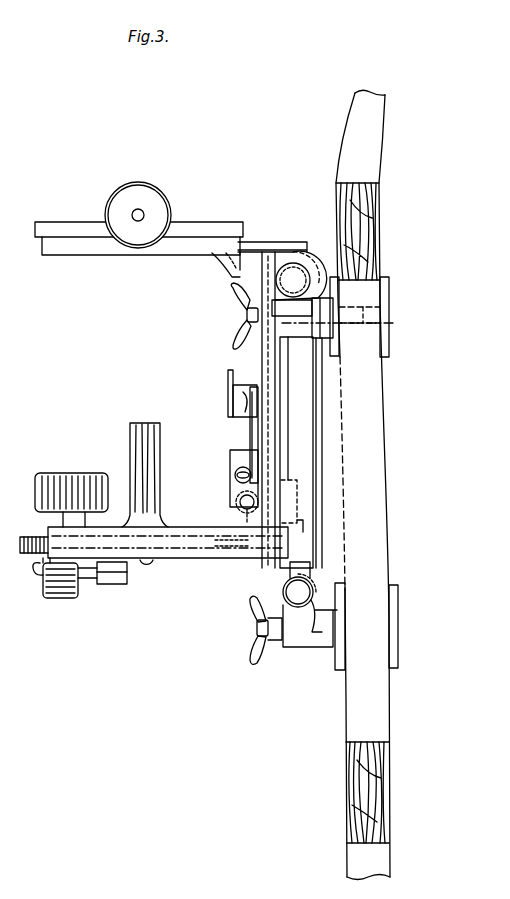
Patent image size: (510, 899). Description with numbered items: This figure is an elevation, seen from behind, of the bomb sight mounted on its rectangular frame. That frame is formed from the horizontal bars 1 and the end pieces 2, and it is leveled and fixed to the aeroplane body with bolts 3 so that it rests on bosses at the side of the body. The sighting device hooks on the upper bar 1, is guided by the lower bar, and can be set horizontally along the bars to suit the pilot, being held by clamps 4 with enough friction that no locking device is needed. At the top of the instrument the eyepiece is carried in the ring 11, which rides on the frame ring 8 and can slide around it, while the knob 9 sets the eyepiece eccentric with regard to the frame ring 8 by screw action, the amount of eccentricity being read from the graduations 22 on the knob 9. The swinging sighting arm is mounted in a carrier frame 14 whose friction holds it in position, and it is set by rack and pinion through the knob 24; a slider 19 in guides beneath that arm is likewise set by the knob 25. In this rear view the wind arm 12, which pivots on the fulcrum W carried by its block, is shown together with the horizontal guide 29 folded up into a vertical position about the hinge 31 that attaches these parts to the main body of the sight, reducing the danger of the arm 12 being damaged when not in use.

The horizontal bar 1 is at (232, 276).
The end piece 2 is at (305, 408).
The bolt 3 is at (243, 320).
The clamp 4 is at (245, 313).
The frame ring 8 is at (76, 248).
The knob 9 is at (164, 192).
The ring 11 is at (62, 224).
The arm 12 is at (229, 373).
The carrier frame 14 is at (212, 560).
The slider 19 is at (127, 577).
The graduations 22 is at (248, 455).
The knob 24 is at (63, 473).
The knob 25 is at (73, 599).
The horizontal guide 29 is at (240, 468).
The hinge 31 is at (240, 502).
The fulcrum W is at (243, 403).